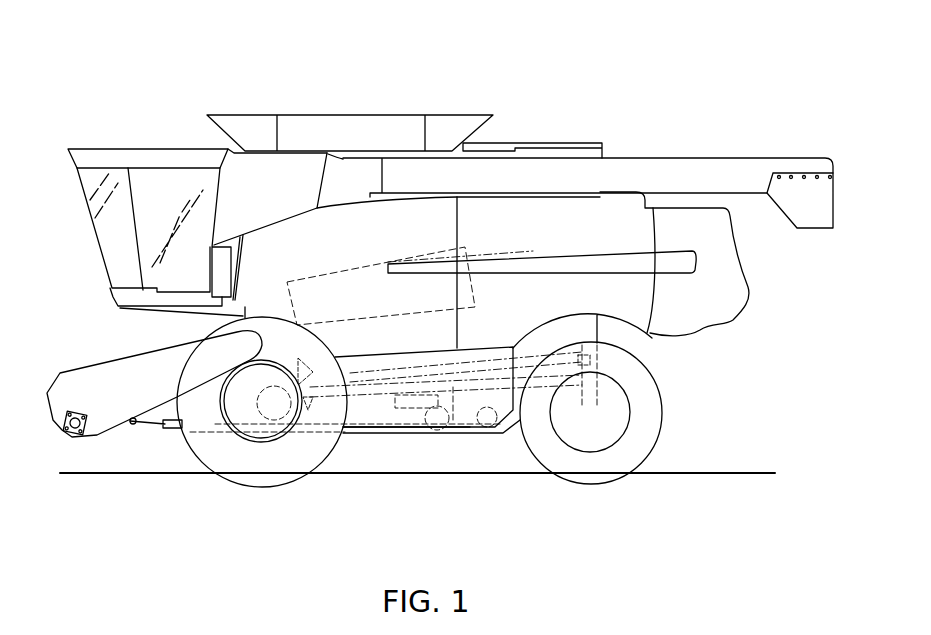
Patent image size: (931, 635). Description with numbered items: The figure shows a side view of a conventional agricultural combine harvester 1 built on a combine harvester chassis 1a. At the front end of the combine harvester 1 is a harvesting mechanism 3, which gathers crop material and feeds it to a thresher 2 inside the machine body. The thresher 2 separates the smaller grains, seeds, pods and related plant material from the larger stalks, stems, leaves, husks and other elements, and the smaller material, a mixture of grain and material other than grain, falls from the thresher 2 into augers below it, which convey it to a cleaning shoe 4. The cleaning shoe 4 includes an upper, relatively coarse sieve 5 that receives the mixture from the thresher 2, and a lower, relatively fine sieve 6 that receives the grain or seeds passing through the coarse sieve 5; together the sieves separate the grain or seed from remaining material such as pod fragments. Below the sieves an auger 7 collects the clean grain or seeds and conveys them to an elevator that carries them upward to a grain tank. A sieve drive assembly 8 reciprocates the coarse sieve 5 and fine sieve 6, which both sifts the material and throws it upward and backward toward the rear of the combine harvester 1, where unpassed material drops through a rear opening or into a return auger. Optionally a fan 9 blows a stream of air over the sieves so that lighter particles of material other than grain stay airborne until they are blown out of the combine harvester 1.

The combine harvester 1 is at (740, 106).
The combine harvester chassis 1a is at (497, 440).
The thresher 2 is at (323, 276).
The harvesting mechanism 3 is at (62, 357).
The cleaning shoe 4 is at (523, 353).
The coarse sieve 5 is at (477, 367).
The fine sieve 6 is at (378, 395).
The auger 7 is at (442, 430).
The sieve drive assembly 8 is at (407, 402).
The fan 9 is at (275, 415).